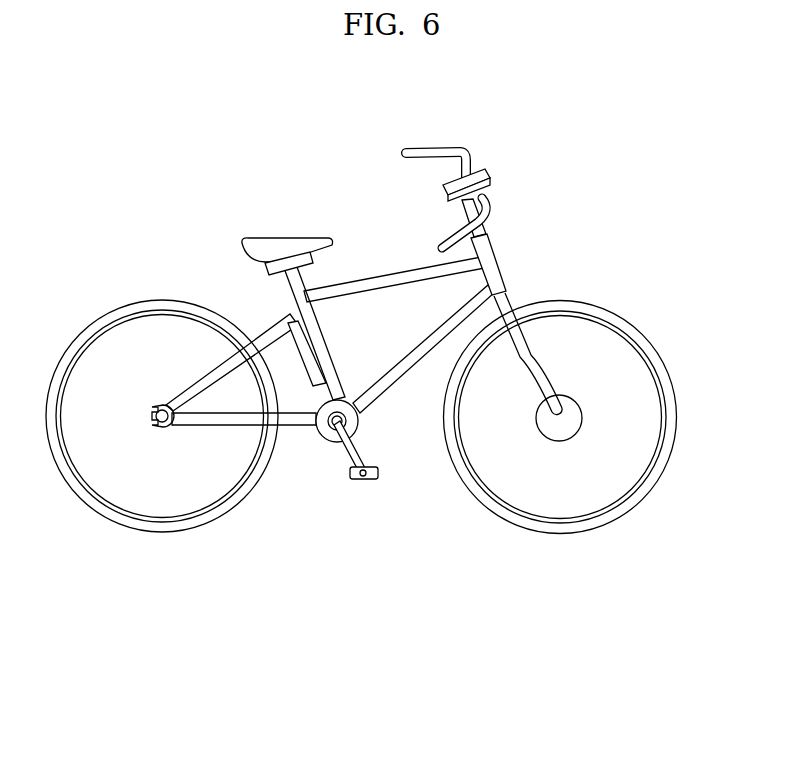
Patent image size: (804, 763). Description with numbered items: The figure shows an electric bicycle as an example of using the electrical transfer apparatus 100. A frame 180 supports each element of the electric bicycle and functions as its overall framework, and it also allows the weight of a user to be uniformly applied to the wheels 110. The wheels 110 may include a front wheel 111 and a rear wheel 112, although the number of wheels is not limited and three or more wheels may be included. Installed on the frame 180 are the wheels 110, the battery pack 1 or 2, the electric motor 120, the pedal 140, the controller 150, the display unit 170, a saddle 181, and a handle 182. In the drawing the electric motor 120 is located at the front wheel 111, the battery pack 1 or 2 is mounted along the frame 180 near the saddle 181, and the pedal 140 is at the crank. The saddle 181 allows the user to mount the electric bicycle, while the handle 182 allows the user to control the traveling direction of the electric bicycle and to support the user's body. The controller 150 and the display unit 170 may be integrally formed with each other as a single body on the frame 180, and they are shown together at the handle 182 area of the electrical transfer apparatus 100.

The electrical transfer apparatus 100 is at (585, 177).
The wheels 110 is at (361, 468).
The front wheel 111 is at (490, 507).
The rear wheel 112 is at (200, 520).
The electric motor 120 is at (567, 407).
The pedal 140 is at (356, 481).
The controller 150 is at (505, 148).
The display unit 170 is at (498, 172).
The frame 180 is at (487, 253).
The saddle 181 is at (278, 243).
The handle 182 is at (425, 147).
The battery pack 1 is at (244, 328).
The battery pack 2 is at (293, 326).